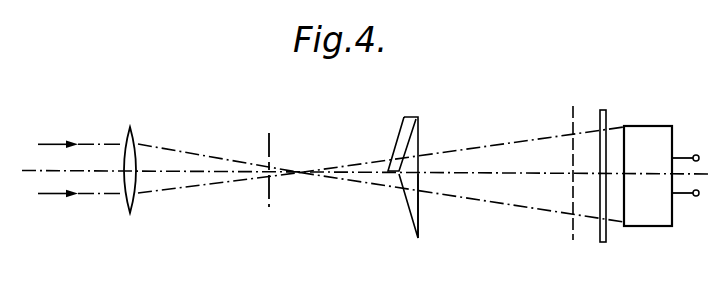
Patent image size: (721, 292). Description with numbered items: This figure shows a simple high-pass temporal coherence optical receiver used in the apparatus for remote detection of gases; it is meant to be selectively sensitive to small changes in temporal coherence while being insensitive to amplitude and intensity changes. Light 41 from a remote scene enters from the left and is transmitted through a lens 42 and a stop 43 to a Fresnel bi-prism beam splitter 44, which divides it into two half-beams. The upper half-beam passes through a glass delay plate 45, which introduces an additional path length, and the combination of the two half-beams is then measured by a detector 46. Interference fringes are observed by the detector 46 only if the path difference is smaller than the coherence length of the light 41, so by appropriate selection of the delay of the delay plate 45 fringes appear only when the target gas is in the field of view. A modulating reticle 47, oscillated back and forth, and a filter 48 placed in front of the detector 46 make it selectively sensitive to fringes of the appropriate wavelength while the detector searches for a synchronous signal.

The light 41 is at (53, 143).
The lens 42 is at (127, 143).
The stop 43 is at (268, 147).
The Fresnel bi-prism beam splitter 44 is at (415, 205).
The glass delay plate 45 is at (401, 135).
The detector 46 is at (640, 132).
The modulating reticle 47 is at (573, 220).
The filter 48 is at (602, 117).